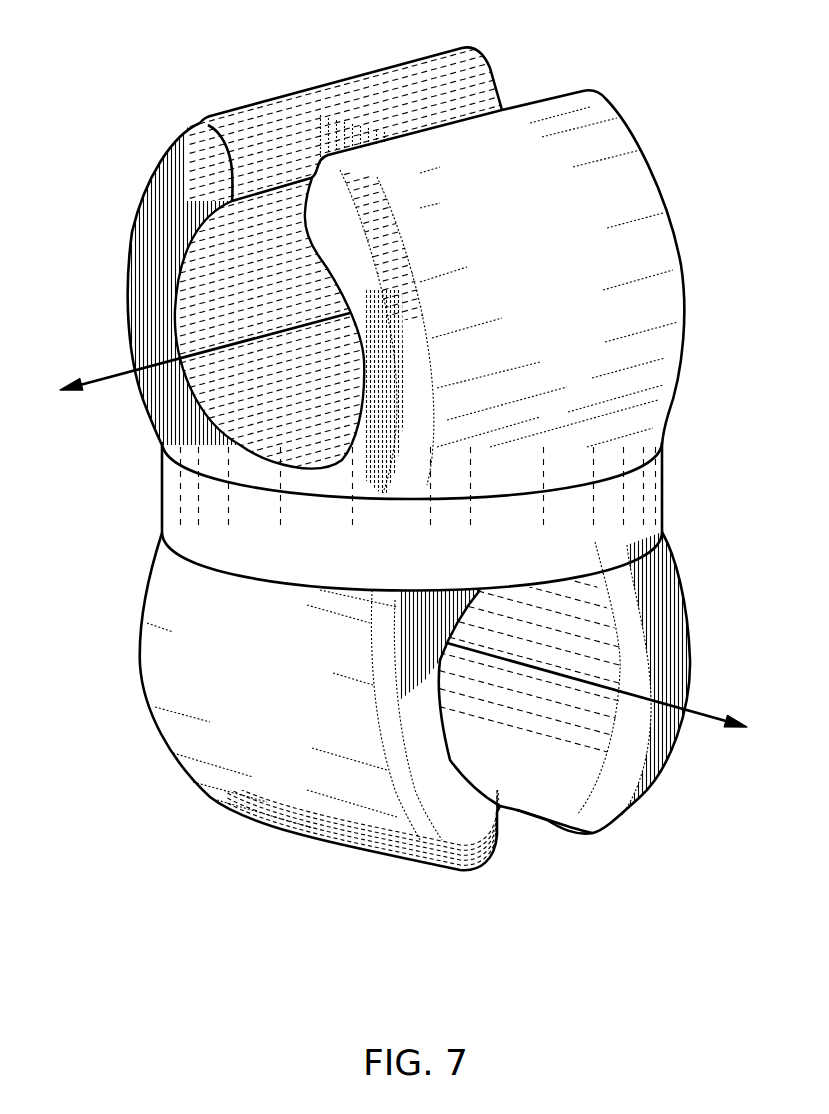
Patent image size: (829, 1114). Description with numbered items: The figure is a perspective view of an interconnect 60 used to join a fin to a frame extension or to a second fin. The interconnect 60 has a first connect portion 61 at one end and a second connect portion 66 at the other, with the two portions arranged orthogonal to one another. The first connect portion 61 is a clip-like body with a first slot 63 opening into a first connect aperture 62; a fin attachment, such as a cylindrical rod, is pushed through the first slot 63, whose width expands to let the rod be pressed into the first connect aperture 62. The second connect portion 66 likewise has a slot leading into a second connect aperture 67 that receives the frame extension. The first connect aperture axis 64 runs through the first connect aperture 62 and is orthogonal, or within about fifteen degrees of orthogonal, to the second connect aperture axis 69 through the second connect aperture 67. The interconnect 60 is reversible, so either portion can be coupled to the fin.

The interconnect 60 is at (205, 74).
The first connect portion 61 is at (153, 258).
The first connect aperture 62 is at (250, 398).
The first slot 63 is at (312, 172).
The first connect aperture axis 64 is at (110, 373).
The second connect portion 66 is at (220, 665).
The second connect aperture 67 is at (575, 627).
The second connect aperture axis 69 is at (707, 723).